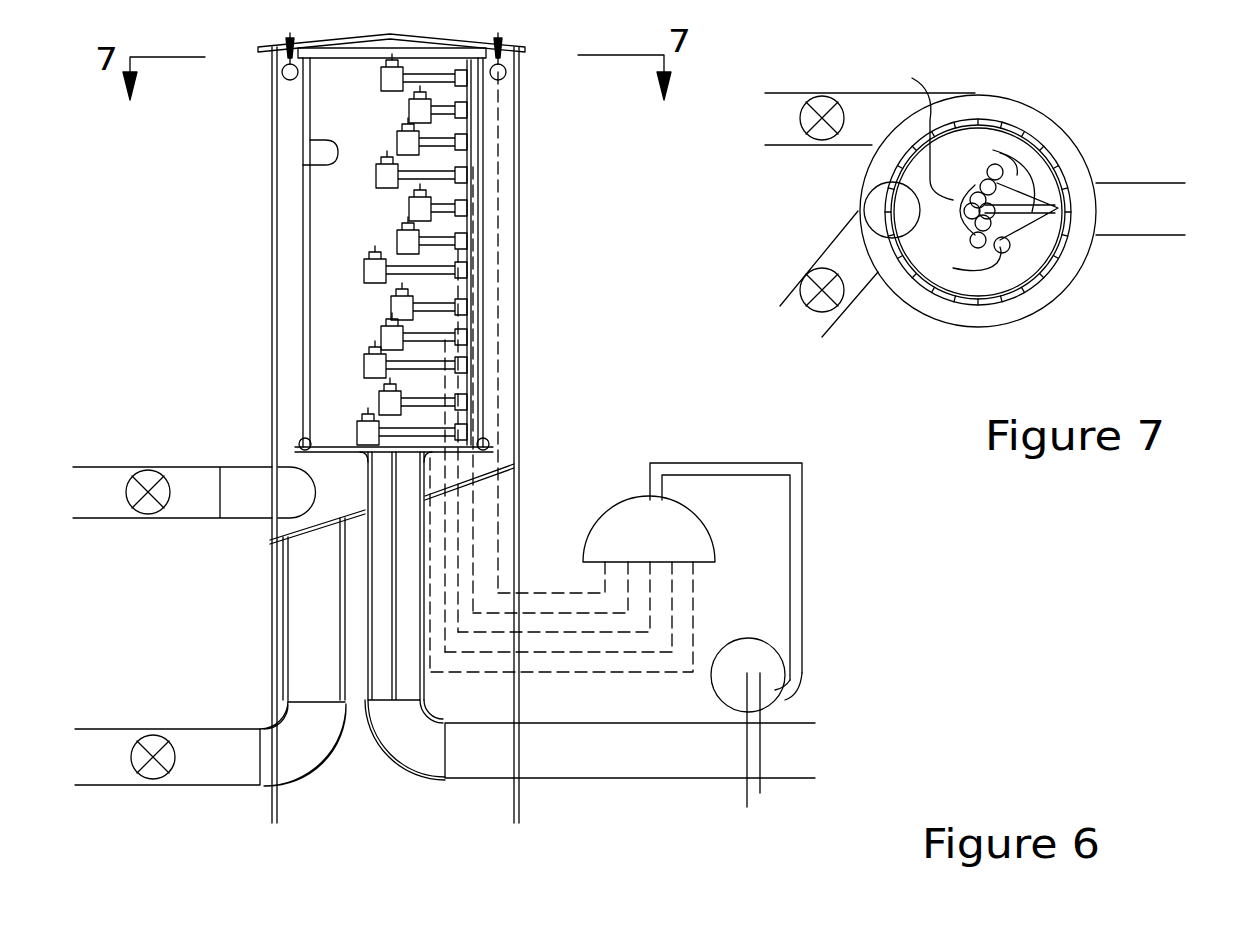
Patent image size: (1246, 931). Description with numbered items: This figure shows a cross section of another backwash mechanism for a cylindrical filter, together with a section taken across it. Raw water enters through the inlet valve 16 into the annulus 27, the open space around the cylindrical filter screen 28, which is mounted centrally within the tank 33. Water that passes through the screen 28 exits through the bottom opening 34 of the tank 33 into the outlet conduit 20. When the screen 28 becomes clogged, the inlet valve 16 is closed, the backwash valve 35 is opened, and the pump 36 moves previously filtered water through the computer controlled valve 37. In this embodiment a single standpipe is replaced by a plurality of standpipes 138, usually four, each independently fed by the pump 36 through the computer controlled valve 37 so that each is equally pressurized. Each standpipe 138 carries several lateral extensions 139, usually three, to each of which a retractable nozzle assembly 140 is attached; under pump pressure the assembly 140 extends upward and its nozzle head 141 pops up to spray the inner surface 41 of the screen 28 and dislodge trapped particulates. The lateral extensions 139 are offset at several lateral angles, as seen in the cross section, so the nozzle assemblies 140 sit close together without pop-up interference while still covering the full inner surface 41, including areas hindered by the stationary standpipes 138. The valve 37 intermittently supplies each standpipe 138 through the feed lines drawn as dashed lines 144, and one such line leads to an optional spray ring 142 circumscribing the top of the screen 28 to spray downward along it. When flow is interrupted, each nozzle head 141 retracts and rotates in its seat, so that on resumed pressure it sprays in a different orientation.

In FIG. 6, the inlet valve 16 is at (148, 470).
In FIG. 7, the inlet valve 16 is at (822, 130).
In FIG. 6, the outlet conduit 20 is at (555, 775).
In FIG. 7, the outlet conduit 20 is at (1128, 222).
In FIG. 7, the annulus 27 is at (1068, 282).
In FIG. 6, the filter screen 28 is at (303, 118).
In FIG. 7, the filter screen 28 is at (1010, 305).
In FIG. 6, the tank 33 is at (273, 300).
In FIG. 7, the tank 33 is at (1080, 148).
In FIG. 7, the bottom opening 34 is at (908, 144).
In FIG. 6, the backwash valve 35 is at (153, 735).
In FIG. 7, the backwash valve 35 is at (822, 305).
In FIG. 6, the pump 36 is at (790, 690).
In FIG. 6, the computer controlled valve 37 is at (618, 520).
In FIG. 6, the inner surface 41 is at (300, 165).
In FIG. 6, the standpipes 138 is at (465, 212).
In FIG. 6, the lateral extensions 139 is at (412, 135).
In FIG. 7, the lateral extensions 139 is at (1008, 160).
In FIG. 6, the retractable nozzle assembly 140 is at (365, 262).
In FIG. 7, the retractable nozzle assembly 140 is at (985, 227).
In FIG. 6, the nozzle head 141 is at (395, 205).
In FIG. 6, the spray ring 142 is at (283, 73).
In FIG. 6, the control lines 144 is at (640, 645).